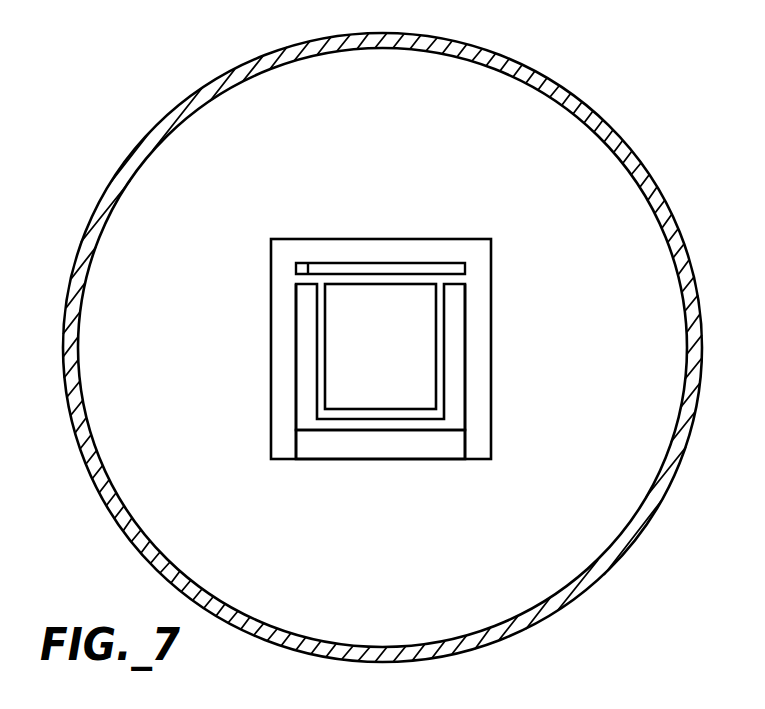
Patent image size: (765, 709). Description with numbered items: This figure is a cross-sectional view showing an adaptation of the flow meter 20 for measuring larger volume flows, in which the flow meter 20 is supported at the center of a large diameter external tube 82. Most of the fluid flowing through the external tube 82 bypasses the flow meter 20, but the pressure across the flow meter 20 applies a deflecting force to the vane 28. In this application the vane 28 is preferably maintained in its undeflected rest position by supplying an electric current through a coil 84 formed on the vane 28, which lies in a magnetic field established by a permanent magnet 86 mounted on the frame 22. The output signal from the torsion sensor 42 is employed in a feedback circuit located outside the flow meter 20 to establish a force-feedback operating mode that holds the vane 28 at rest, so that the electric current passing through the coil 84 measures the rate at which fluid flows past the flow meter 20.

The external tube 82 is at (582, 83).
The flow meter 20 is at (282, 298).
The frame 22 is at (473, 437).
The torsion sensor 42 is at (307, 266).
The coil 84 is at (320, 370).
The vane 28 is at (393, 367).
The permanent magnet 86 is at (310, 446).